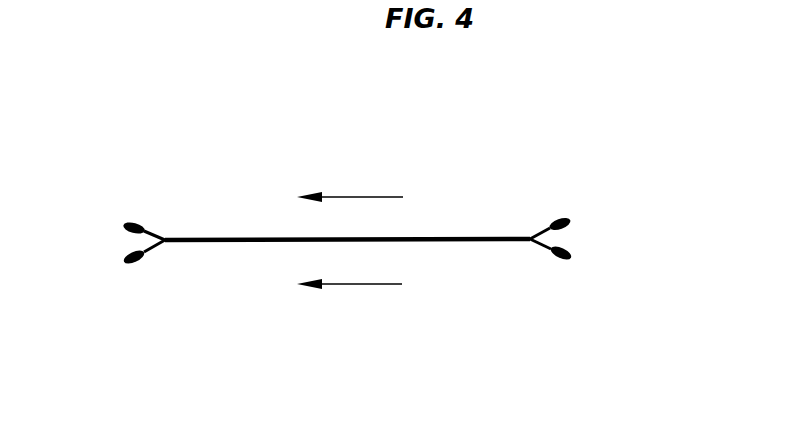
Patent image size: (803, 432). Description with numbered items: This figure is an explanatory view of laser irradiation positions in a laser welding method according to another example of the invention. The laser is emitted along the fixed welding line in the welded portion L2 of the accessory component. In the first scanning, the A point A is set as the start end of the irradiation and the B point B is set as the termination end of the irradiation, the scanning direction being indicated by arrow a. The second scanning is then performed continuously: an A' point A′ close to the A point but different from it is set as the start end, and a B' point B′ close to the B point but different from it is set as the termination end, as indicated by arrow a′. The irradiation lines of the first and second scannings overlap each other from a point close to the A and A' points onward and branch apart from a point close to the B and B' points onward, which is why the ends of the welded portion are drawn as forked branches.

The welded portion L2 is at (204, 162).
The B point B is at (127, 268).
The B' point B′ is at (125, 215).
The A point A is at (563, 265).
The A' point A′ is at (562, 212).
The arrow a is at (349, 301).
The arrow a' a′ is at (350, 179).